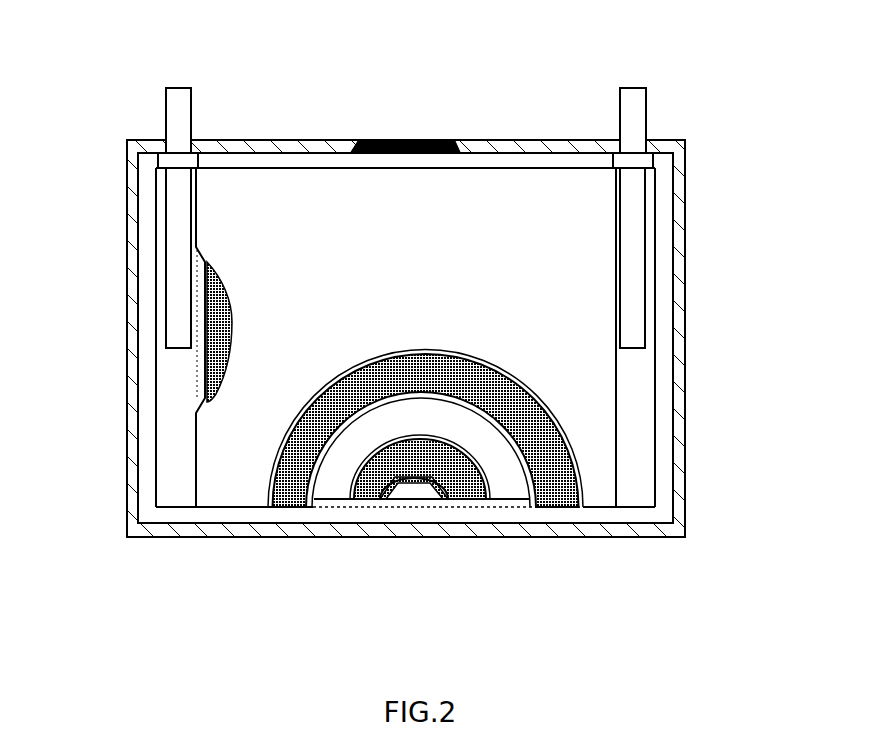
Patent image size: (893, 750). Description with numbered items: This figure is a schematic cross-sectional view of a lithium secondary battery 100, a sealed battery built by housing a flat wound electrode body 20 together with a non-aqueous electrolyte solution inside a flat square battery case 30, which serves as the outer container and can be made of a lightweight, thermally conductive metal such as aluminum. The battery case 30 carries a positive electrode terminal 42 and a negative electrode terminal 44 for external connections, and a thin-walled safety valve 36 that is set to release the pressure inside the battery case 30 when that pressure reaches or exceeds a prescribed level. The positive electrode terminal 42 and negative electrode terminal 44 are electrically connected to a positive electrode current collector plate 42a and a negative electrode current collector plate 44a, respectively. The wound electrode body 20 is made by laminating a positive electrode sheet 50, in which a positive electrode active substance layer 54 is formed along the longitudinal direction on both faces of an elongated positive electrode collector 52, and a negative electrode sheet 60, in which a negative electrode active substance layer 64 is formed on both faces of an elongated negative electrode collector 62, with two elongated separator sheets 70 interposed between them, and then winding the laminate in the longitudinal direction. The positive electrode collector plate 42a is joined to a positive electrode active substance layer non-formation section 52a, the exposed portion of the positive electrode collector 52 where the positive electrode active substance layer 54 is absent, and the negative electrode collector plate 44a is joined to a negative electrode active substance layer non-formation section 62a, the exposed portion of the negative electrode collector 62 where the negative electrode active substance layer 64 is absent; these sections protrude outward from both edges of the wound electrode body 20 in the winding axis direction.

The lithium secondary battery 100 is at (683, 106).
The wound electrode body 20 is at (410, 366).
The battery case 30 is at (686, 250).
The safety valve 36 is at (406, 140).
The positive electrode terminal 42 is at (177, 88).
The positive electrode current collector plate 42a is at (178, 237).
The negative electrode terminal 44 is at (632, 88).
The negative electrode current collector plate 44a is at (633, 200).
The positive electrode sheet 50 is at (292, 490).
The positive electrode collector 52 is at (157, 405).
The positive electrode active substance layer non-formation section 52a is at (170, 486).
The positive electrode active substance layer 54 is at (231, 290).
The negative electrode sheet 60 is at (416, 547).
The negative electrode collector 62 is at (657, 360).
The negative electrode active substance layer non-formation section 62a is at (640, 407).
The negative electrode active substance layer 64 is at (416, 547).
The separator sheet 70 is at (233, 440).